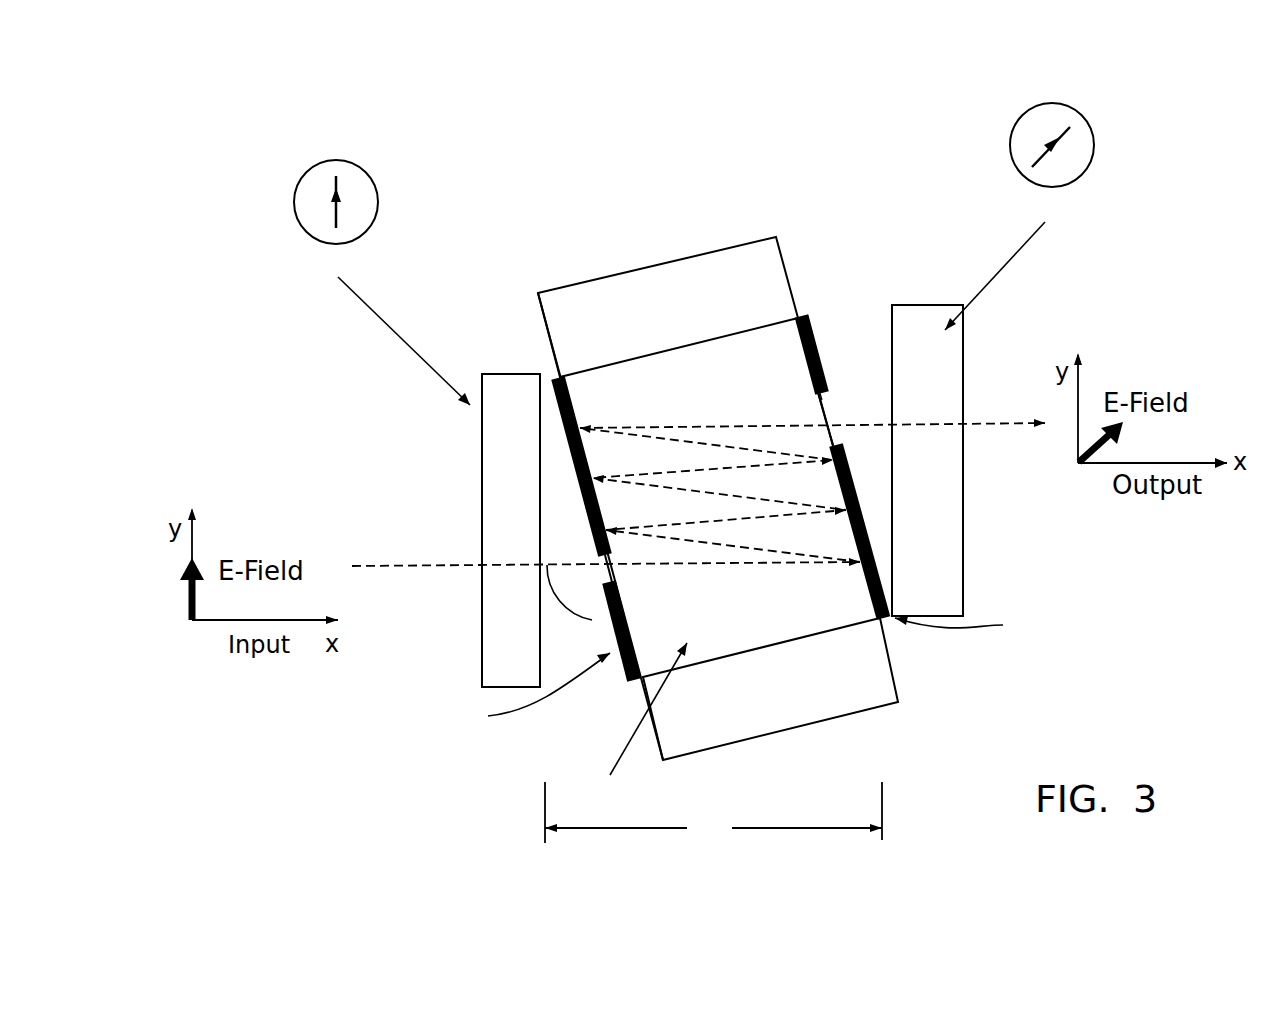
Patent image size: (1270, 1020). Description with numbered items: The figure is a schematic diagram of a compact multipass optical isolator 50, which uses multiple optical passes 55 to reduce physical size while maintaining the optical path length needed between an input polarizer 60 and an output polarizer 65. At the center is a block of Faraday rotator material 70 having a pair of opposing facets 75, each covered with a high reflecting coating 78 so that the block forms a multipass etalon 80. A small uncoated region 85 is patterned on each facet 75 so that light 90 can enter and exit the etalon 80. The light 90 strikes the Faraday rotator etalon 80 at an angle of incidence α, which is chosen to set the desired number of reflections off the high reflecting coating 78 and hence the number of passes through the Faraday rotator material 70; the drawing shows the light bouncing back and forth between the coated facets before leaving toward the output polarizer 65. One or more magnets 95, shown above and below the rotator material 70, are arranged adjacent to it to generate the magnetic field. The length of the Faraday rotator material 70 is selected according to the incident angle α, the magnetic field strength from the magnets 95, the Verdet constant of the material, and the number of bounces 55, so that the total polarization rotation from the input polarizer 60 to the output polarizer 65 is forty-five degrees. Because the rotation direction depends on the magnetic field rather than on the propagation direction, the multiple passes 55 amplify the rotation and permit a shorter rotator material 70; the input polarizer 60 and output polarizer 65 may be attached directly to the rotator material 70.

The multipass optical isolator 50 is at (605, 198).
The optical passes 55 is at (777, 418).
The input polarizer 60 is at (483, 607).
The output polarizer 65 is at (908, 303).
The Faraday rotator material 70 is at (744, 507).
The opposing facets 75 is at (570, 407).
The high reflecting coating 78 is at (567, 441).
The multipass etalon 80 is at (806, 312).
The uncoated region 85 is at (580, 552).
The light 90 is at (392, 562).
The magnets 95 is at (660, 265).